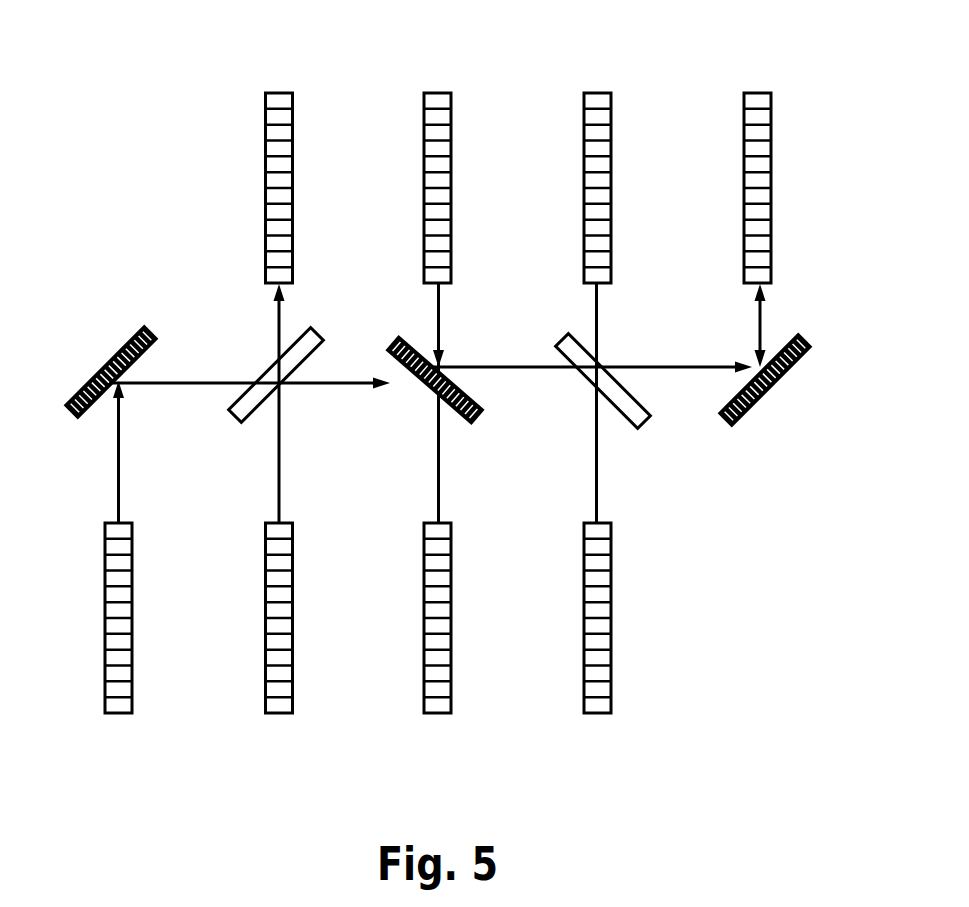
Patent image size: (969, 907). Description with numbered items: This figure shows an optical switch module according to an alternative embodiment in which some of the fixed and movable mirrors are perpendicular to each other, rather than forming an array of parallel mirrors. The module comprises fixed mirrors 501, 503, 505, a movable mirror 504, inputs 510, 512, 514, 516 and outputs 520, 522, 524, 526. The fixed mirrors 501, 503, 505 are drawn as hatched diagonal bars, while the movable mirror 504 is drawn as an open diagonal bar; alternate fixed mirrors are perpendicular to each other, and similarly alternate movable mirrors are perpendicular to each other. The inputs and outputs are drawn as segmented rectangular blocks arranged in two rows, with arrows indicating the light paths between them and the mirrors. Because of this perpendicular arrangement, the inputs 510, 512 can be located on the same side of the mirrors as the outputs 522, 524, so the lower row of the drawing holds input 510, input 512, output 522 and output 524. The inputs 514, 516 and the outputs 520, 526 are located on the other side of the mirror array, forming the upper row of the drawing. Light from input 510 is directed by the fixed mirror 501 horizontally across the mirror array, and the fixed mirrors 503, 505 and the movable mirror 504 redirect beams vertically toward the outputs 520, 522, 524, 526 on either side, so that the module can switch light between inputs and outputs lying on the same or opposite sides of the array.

The fixed mirror 501 is at (103, 373).
The fixed mirror 503 is at (468, 420).
The movable mirror 504 is at (600, 365).
The fixed mirror 505 is at (763, 418).
The input 510 is at (105, 703).
The input 512 is at (279, 714).
The input 514 is at (433, 92).
The input 516 is at (593, 92).
The output 520 is at (275, 92).
The output 522 is at (437, 714).
The output 524 is at (597, 714).
The output 526 is at (753, 92).